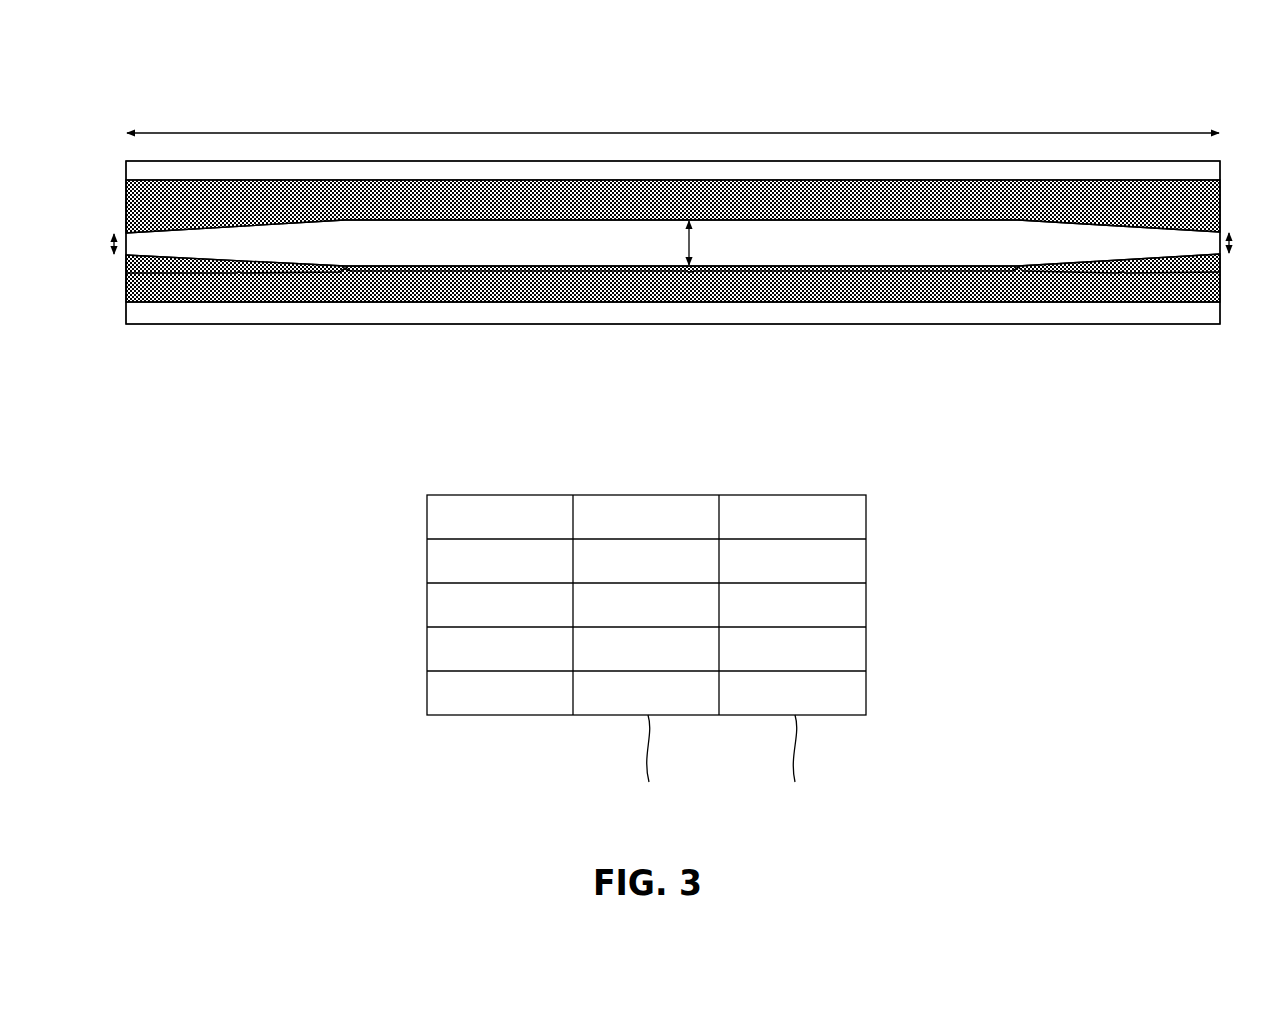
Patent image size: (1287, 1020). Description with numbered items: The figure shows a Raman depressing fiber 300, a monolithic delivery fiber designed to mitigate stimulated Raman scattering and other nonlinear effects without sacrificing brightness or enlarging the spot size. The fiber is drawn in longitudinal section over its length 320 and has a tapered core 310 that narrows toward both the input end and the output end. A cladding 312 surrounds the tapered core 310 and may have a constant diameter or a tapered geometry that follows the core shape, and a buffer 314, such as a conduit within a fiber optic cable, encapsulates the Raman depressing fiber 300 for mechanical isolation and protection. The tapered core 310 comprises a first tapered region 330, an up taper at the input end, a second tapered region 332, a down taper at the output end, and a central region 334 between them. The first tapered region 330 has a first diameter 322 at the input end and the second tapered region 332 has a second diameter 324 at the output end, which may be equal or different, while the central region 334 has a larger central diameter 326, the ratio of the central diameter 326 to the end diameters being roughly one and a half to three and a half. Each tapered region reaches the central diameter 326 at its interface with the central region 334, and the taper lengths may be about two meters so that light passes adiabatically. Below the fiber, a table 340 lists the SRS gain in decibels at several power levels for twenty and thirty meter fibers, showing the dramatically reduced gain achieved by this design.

The Raman depressing fiber 300 is at (150, 48).
The tapered core 310 is at (673, 243).
The cladding 312 is at (126, 204).
The buffer 314 is at (126, 170).
The length 320 is at (673, 112).
The first diameter 322 is at (90, 244).
The second diameter 324 is at (1258, 244).
The central diameter 326 is at (717, 243).
The first tapered region 330 is at (239, 273).
The second tapered region 332 is at (1122, 273).
The central region 334 is at (690, 273).
The table 340 is at (424, 468).